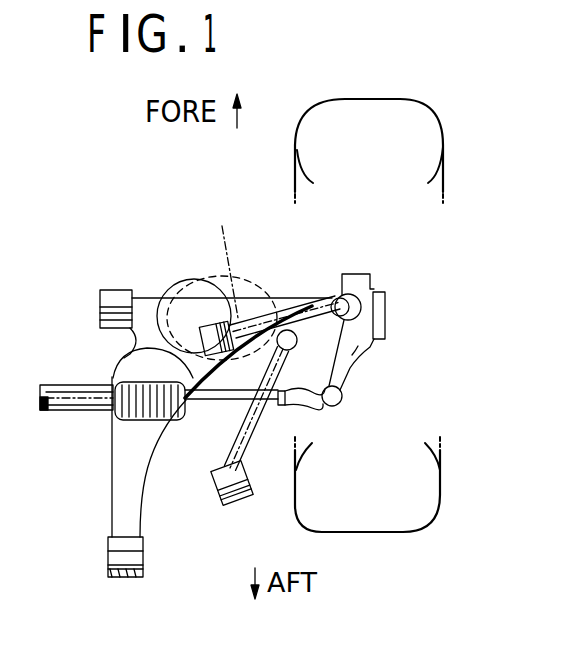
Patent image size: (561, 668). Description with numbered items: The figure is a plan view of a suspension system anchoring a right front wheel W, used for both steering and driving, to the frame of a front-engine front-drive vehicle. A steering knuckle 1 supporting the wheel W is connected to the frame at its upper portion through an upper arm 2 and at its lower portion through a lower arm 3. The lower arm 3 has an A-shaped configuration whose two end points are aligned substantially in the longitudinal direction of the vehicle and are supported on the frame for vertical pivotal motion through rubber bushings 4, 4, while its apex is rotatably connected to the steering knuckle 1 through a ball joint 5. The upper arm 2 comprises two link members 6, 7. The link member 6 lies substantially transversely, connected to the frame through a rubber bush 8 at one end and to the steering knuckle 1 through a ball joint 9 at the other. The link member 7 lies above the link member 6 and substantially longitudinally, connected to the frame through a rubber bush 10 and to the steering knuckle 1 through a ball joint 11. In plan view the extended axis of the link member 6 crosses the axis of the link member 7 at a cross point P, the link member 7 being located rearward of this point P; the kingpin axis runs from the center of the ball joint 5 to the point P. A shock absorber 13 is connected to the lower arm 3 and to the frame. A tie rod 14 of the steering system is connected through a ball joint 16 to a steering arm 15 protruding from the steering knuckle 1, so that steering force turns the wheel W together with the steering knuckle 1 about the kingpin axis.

The steering knuckle 1 is at (386, 312).
The upper arm 2 is at (301, 355).
The lower arm 3 is at (189, 288).
The rubber bushings 4 is at (120, 290).
The ball joint 5 is at (346, 273).
The link member 6 is at (268, 316).
The link member 7 is at (262, 418).
The rubber bush 8 is at (128, 347).
The ball joint 9 is at (336, 294).
The rubber bush 10 is at (221, 503).
The ball joint 11 is at (387, 339).
The shock absorber 13 is at (228, 256).
The tie rod 14 is at (202, 399).
The steering arm 15 is at (355, 350).
The ball joint 16 is at (347, 402).
The cross point P is at (286, 330).
The front wheel W is at (446, 140).